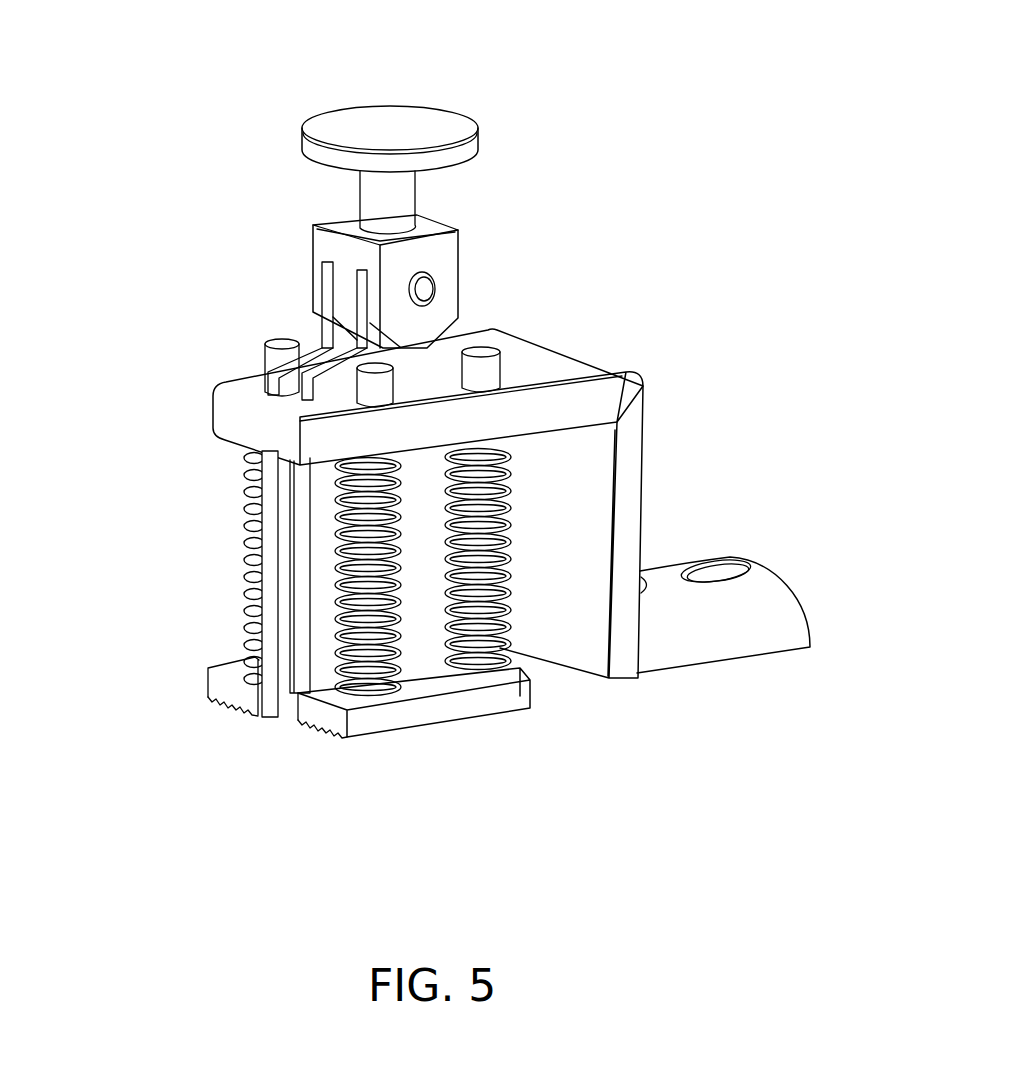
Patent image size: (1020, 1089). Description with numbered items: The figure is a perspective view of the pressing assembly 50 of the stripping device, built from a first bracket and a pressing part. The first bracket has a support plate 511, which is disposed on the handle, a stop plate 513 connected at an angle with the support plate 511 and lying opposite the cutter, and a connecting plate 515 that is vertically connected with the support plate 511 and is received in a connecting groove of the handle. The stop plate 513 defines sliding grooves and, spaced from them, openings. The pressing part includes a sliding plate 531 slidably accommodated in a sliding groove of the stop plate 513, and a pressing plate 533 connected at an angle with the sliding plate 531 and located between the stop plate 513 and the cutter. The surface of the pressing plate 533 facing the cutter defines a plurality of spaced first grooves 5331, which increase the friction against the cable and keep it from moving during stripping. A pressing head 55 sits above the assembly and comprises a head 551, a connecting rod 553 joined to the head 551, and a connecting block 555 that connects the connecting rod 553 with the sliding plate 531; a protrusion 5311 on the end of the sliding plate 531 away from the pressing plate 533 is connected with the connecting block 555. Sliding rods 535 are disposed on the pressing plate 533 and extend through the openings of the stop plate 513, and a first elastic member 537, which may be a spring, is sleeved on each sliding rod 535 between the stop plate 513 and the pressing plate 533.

The pressing assembly 50 is at (362, 30).
The pressing head 55 is at (386, 223).
The head 551 is at (430, 122).
The connecting rod 553 is at (392, 210).
The connecting block 555 is at (386, 307).
The protrusion 5311 is at (320, 300).
The sliding rod 535 is at (263, 352).
The stop plate 513 is at (563, 398).
The support plate 511 is at (565, 503).
The connecting plate 515 is at (740, 628).
The sliding plate 531 is at (267, 515).
The pressing plate 533 is at (191, 704).
The first grooves 5331 is at (256, 716).
The first elastic member 537 is at (487, 578).